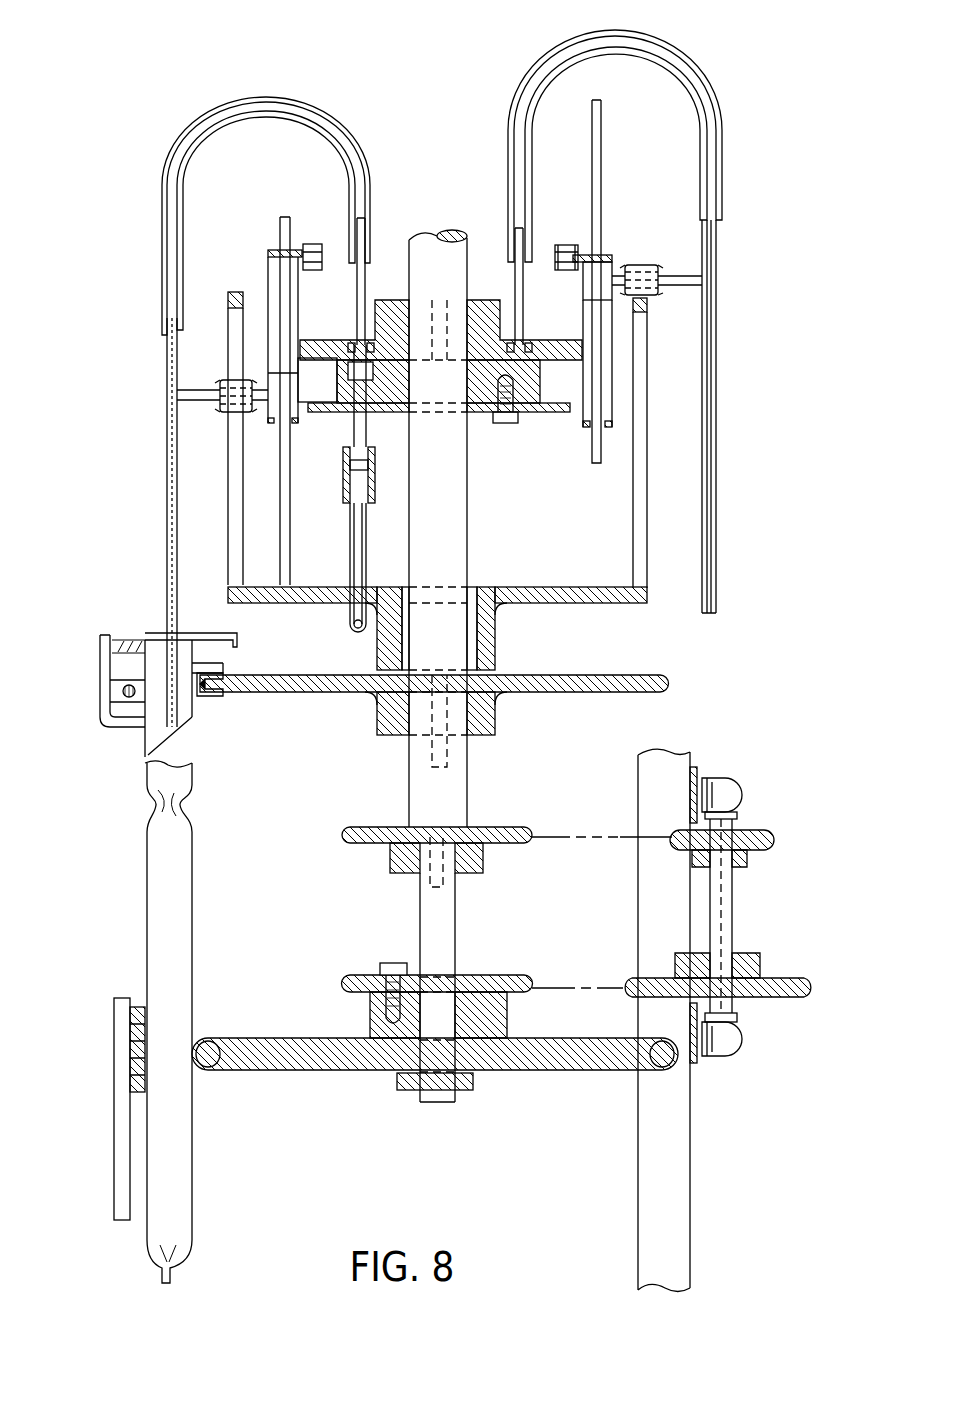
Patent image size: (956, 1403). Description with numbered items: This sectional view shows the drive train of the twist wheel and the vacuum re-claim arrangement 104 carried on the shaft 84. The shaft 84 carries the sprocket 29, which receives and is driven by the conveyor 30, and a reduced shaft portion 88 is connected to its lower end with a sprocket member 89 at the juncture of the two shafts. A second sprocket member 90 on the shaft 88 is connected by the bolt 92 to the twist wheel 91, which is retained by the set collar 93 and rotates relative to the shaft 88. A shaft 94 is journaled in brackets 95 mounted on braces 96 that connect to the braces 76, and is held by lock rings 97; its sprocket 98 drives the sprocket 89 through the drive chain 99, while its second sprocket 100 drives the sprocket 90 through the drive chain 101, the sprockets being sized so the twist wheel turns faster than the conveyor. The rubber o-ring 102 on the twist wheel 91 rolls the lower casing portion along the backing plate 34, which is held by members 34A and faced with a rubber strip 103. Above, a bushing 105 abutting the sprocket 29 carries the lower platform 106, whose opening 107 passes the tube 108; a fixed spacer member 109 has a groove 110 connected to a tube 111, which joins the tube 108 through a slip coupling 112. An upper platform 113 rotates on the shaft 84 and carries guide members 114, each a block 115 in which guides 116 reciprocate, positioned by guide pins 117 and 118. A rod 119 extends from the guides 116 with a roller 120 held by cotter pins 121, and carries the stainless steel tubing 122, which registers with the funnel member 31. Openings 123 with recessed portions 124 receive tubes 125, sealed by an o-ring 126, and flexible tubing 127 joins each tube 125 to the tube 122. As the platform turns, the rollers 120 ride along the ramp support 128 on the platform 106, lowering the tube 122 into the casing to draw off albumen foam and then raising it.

The sprocket 29 is at (580, 693).
The conveyor 30 is at (212, 698).
The funnel member 31 is at (96, 688).
The backing plate 34 is at (130, 1045).
The members 34A is at (114, 1178).
The braces 76 is at (690, 1166).
The shaft 84 is at (468, 495).
The reduced shaft portion 88 is at (456, 918).
The sprocket member 89 is at (478, 858).
The second sprocket member 90 is at (497, 978).
The twist wheel 91 is at (556, 1071).
The bolt 92 is at (385, 964).
The set collar 93 is at (466, 1091).
The shaft 94 is at (726, 905).
The brackets 95 is at (742, 790).
The braces 96 is at (697, 770).
The lock rings 97 is at (738, 816).
The sprocket 98 is at (772, 840).
The drive chain 99 is at (562, 835).
The second sprocket 100 is at (813, 987).
The drive chain 101 is at (575, 982).
The o-ring 102 is at (200, 1070).
The rubber strip 103 is at (130, 1075).
The vacuum re-claim arrangement 104 is at (441, 254).
The bushing 105 is at (496, 640).
The lower platform 106 is at (580, 604).
The opening 107 is at (356, 594).
The tube 108 is at (350, 527).
The fixed spacer member 109 is at (518, 422).
The groove 110 is at (395, 372).
The tube 111 is at (354, 438).
The slip coupling 112 is at (343, 482).
The upper platform 113 is at (318, 340).
The guide members 114 is at (262, 262).
The block 115 is at (612, 400).
The guides 116 is at (583, 288).
The guide pin 117 is at (592, 466).
The guide pin 118 is at (601, 122).
The rod 119 is at (178, 392).
The roller 120 is at (228, 412).
The cotter pins 121 is at (218, 378).
The stainless steel tubing 122 is at (167, 483).
The openings 123 is at (533, 345).
The recessed portion 124 is at (545, 362).
The stainless steel tubing 125 is at (362, 300).
The o-ring 126 is at (348, 364).
The flexible tubing 127 is at (162, 282).
The ramp support 128 is at (228, 522).